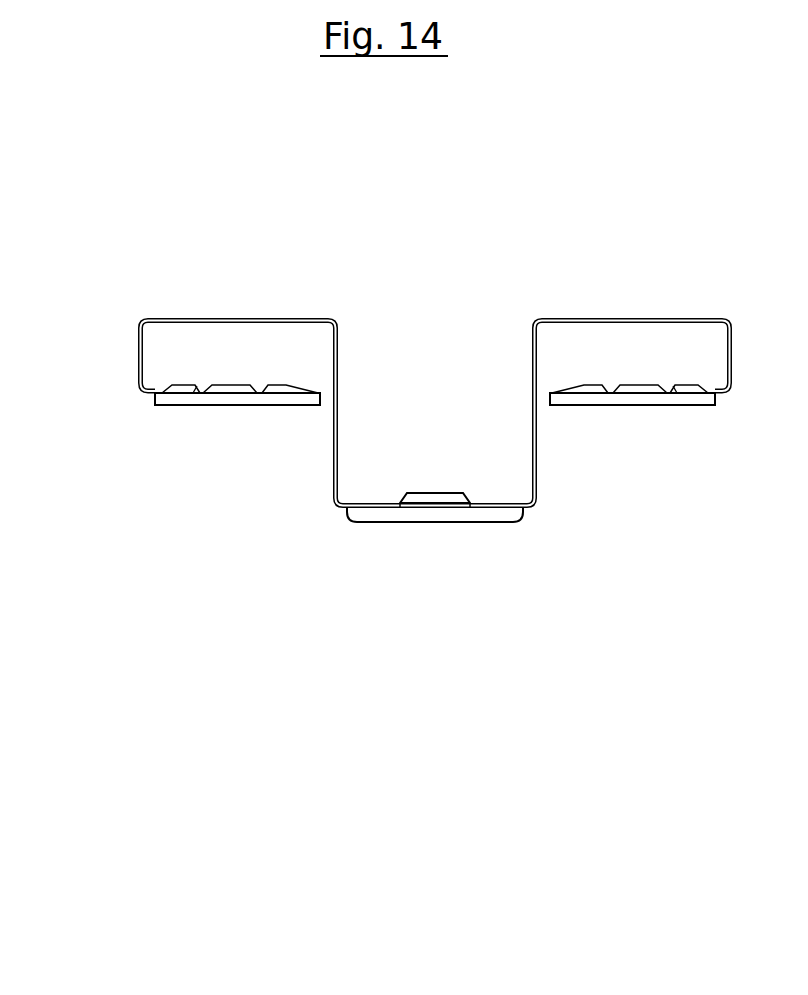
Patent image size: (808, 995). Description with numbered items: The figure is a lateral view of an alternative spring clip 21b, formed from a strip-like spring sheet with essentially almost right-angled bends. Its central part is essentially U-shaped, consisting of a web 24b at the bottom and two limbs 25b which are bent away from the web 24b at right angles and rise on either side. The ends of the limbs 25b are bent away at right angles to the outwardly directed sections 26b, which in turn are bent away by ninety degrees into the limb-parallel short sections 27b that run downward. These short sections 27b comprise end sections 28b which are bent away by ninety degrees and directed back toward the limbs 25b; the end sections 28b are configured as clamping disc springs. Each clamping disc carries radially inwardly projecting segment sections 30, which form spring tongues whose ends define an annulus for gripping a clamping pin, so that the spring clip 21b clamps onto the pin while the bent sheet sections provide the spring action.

The spring clip 21b is at (483, 280).
The web 24b is at (485, 512).
The limbs 25b is at (337, 458).
The sections 26b is at (200, 318).
The limb-parallel short sections 27b is at (139, 355).
The end sections 28b is at (178, 397).
The segment sections 30 is at (223, 390).